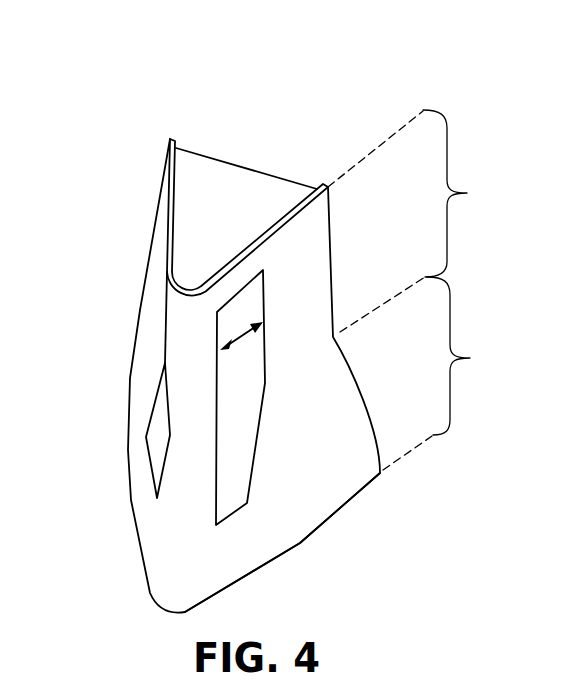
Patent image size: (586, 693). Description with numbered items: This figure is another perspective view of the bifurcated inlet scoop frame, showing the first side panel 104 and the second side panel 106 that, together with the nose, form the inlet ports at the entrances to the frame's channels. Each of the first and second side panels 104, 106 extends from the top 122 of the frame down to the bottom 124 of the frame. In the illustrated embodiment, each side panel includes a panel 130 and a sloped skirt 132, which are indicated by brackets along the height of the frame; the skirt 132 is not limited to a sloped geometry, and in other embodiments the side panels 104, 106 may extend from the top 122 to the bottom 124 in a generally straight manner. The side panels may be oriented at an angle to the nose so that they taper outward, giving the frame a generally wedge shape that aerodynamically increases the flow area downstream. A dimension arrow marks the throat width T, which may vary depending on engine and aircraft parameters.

The first side panel 104 is at (325, 420).
The second side panel 106 is at (165, 520).
The top 122 is at (273, 230).
The bottom 124 is at (303, 543).
The panel 130 is at (421, 193).
The sloped skirt 132 is at (429, 373).
The throat width T is at (250, 332).